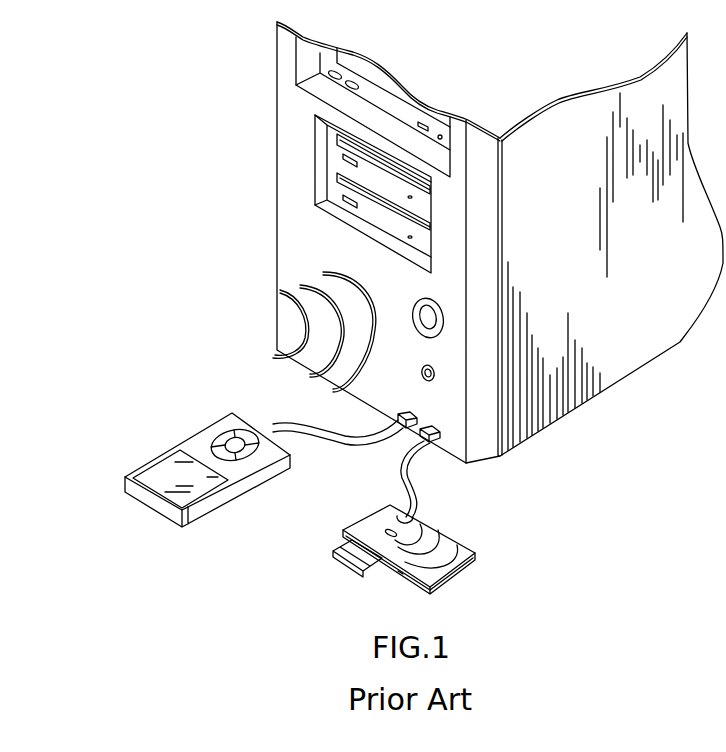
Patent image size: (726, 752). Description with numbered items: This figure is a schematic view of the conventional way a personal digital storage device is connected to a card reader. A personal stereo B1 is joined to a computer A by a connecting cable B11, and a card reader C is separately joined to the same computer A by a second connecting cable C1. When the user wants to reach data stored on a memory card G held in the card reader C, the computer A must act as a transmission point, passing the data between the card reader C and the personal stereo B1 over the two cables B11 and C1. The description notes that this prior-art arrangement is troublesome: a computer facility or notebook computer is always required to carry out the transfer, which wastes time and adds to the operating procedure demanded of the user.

The computer A is at (253, 209).
The personal stereo B1 is at (157, 440).
The connecting cable B11 is at (398, 420).
The card reader C is at (480, 583).
The connecting cable C1 is at (436, 433).
The memory card G is at (342, 558).